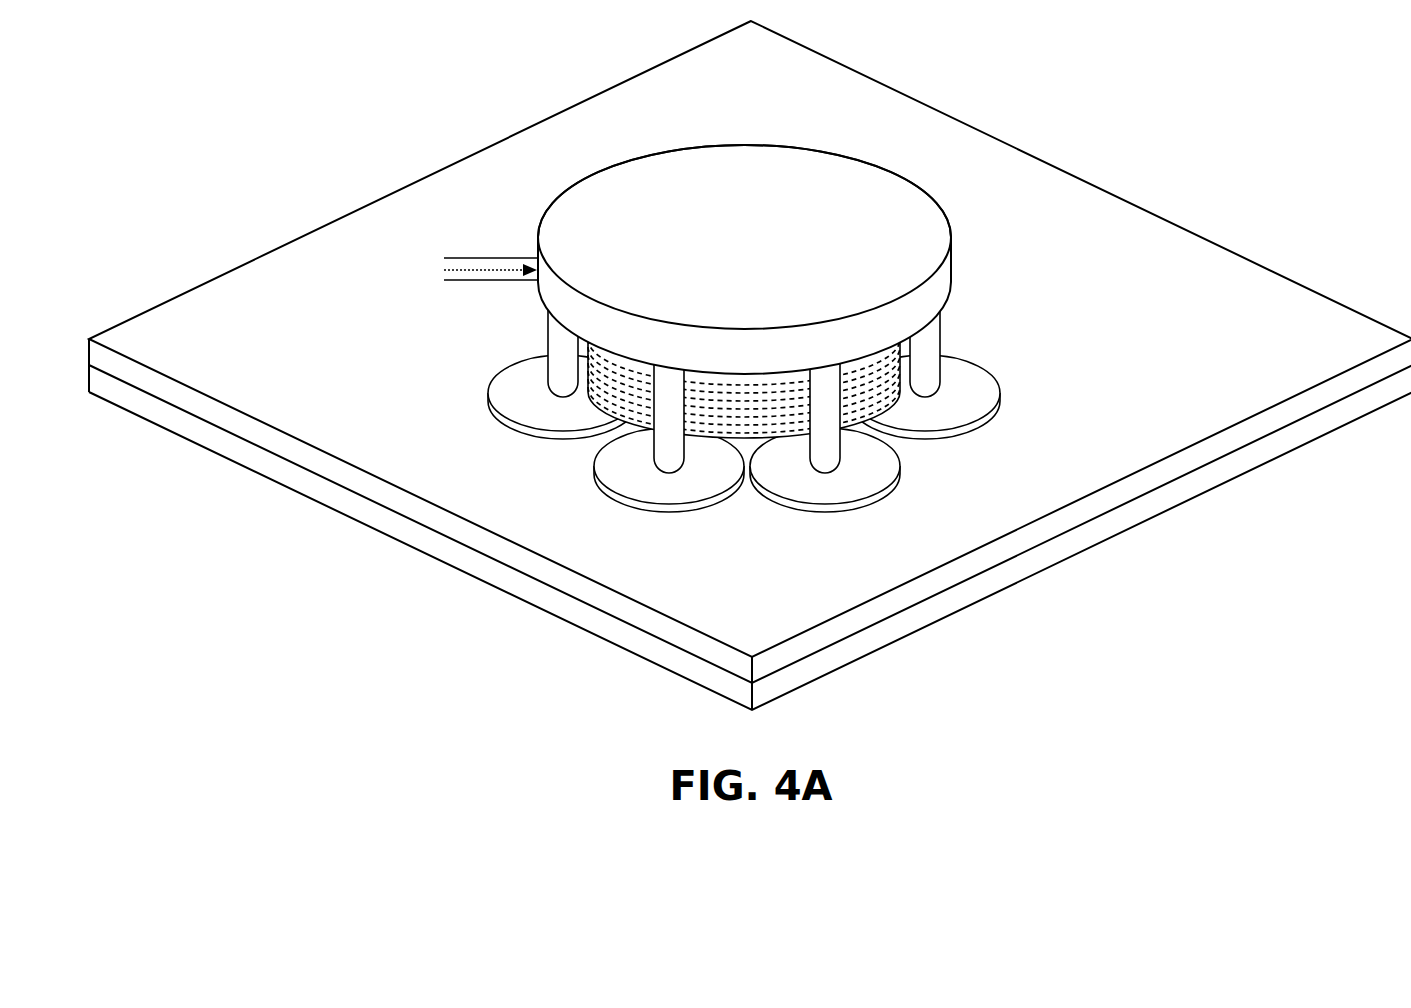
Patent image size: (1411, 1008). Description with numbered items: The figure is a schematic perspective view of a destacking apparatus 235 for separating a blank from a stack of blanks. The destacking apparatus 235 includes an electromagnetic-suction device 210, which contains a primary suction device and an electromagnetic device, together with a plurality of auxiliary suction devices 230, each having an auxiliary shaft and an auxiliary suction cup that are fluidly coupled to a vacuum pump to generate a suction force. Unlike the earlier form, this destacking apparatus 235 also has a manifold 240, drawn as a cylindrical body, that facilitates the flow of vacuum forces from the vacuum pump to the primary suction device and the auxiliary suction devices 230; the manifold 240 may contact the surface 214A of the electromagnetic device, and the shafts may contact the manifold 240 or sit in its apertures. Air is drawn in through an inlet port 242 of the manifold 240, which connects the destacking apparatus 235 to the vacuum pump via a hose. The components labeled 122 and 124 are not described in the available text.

The support plate 122 is at (1052, 165).
The lower plate layer 124 is at (1283, 455).
The electromagnetic-suction device 210 is at (572, 465).
The surface of electromagnetic device 214A is at (760, 365).
The auxiliary suction devices 230 is at (963, 376).
The destacking apparatus 235 is at (982, 255).
The manifold 240 is at (745, 146).
The inlet port 242 is at (524, 299).